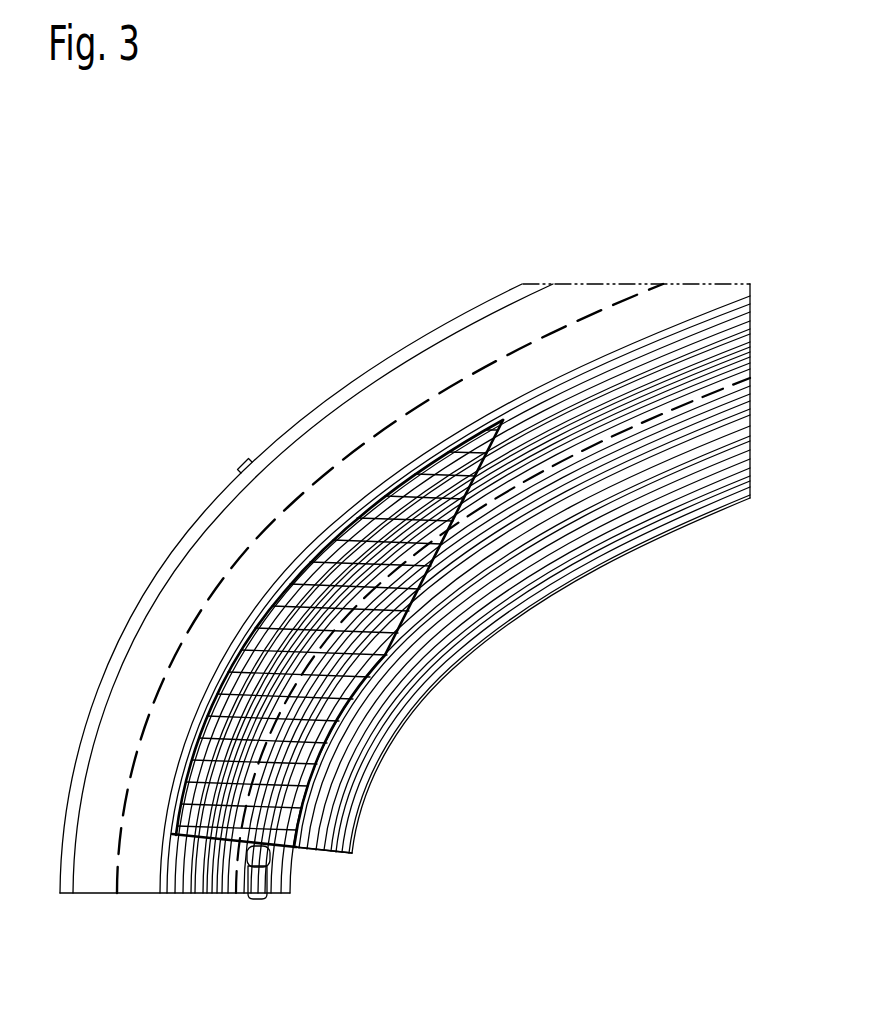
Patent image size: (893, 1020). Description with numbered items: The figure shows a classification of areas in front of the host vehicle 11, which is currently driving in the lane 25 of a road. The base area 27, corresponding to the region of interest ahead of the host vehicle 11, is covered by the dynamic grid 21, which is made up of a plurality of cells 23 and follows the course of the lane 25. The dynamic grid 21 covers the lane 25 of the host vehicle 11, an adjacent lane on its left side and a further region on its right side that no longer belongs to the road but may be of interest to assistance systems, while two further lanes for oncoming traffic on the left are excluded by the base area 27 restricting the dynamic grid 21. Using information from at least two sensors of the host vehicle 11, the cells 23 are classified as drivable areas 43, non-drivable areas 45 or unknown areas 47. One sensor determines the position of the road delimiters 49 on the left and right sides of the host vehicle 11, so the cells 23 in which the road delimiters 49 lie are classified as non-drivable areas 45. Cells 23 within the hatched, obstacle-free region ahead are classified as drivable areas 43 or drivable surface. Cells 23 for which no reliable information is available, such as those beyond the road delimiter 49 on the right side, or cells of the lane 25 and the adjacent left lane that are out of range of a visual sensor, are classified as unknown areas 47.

The host vehicle 11 is at (253, 900).
The dynamic grid 21 is at (372, 845).
The cells 23 is at (322, 850).
The lane 25 is at (578, 432).
The base area 27 is at (685, 522).
The drivable areas 43 is at (228, 846).
The non-drivable areas 45 is at (305, 555).
The unknown areas 47 is at (620, 445).
The road delimiters 49 is at (200, 717).